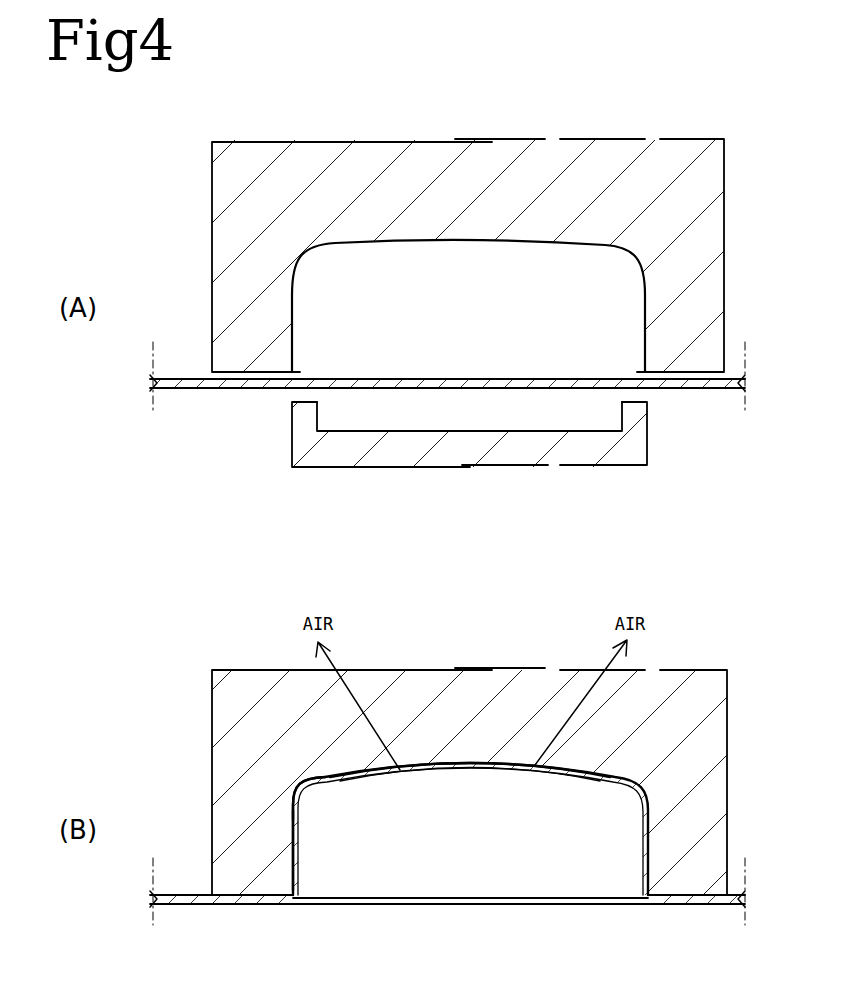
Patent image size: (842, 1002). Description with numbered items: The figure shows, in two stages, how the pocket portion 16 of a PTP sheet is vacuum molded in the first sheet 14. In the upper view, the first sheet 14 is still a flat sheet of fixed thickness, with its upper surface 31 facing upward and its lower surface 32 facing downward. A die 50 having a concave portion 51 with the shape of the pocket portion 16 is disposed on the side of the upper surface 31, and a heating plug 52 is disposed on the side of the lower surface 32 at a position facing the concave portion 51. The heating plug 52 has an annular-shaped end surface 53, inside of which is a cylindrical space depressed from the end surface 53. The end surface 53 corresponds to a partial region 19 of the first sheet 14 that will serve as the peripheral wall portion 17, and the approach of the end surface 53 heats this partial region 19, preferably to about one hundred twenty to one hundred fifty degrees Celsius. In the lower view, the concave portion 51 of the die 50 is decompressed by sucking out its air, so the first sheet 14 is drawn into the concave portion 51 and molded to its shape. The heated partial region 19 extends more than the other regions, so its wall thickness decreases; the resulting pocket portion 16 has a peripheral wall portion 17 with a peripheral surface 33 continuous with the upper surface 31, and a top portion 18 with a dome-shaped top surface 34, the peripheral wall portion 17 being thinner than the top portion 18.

The first sheet 14 is at (240, 392).
The pocket portion 16 is at (652, 848).
The peripheral wall portion 17 is at (298, 858).
The top portion 18 is at (478, 771).
The partial region 19 is at (300, 372).
The upper surface 31 is at (185, 378).
The lower surface 32 is at (170, 390).
The peripheral surface 33 is at (292, 825).
The top surface 34 is at (435, 762).
The die 50 is at (212, 255).
The concave portion 51 is at (535, 272).
The heating plug 52 is at (647, 436).
The end surface 53 is at (632, 395).